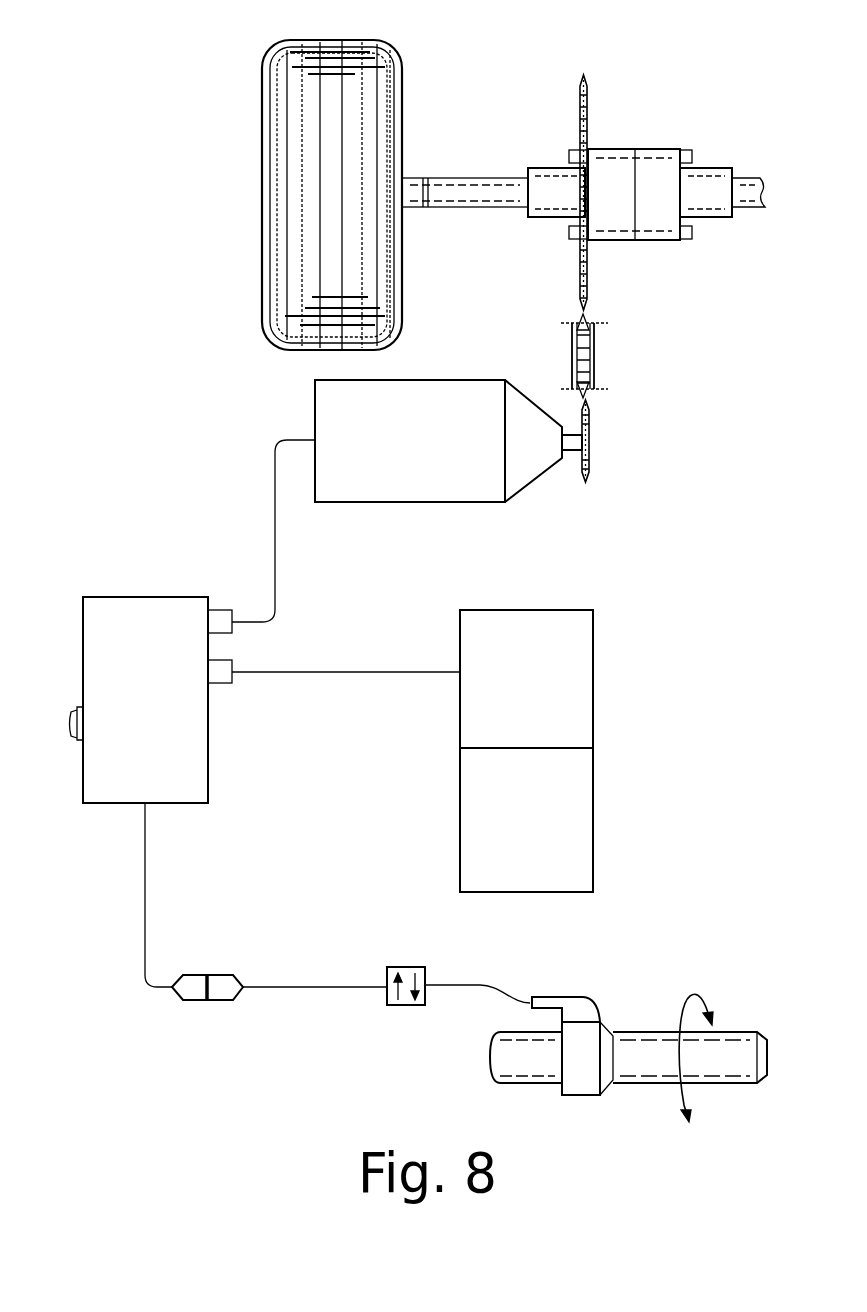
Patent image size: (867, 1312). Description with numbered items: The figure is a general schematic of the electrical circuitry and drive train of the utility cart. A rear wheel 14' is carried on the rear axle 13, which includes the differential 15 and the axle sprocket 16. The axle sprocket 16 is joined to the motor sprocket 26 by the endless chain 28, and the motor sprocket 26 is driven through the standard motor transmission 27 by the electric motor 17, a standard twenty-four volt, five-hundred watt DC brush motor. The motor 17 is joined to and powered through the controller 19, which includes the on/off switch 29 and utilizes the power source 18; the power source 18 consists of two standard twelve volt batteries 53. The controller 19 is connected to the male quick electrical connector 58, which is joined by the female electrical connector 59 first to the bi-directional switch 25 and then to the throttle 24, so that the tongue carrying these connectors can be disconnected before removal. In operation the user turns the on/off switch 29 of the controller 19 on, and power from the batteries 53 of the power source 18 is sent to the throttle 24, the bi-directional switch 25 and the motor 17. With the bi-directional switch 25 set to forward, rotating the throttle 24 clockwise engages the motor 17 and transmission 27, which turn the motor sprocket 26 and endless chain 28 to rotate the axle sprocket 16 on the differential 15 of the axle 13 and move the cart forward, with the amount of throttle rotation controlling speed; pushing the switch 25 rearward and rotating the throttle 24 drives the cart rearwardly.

The rear wheel 14' is at (299, 195).
The rear axle 13 is at (462, 187).
The differential 15 is at (668, 157).
The axle sprocket 16 is at (588, 97).
The endless chain 28 is at (597, 358).
The motor sprocket 26 is at (590, 463).
The motor transmission 27 is at (528, 473).
The electric motor 17 is at (430, 457).
The controller 19 is at (162, 715).
The on/off switch 29 is at (68, 713).
The power source 18 is at (567, 751).
The battery 53 is at (542, 693).
The quick electrical connector 58 is at (192, 973).
The electrical connector 59 is at (225, 973).
The bi-directional switch 25 is at (400, 965).
The throttle 24 is at (756, 1027).